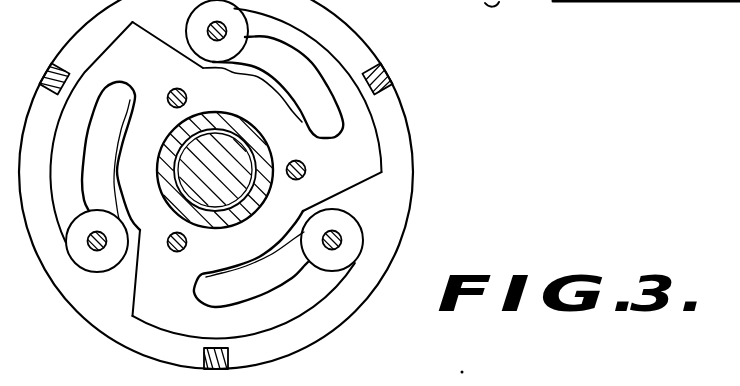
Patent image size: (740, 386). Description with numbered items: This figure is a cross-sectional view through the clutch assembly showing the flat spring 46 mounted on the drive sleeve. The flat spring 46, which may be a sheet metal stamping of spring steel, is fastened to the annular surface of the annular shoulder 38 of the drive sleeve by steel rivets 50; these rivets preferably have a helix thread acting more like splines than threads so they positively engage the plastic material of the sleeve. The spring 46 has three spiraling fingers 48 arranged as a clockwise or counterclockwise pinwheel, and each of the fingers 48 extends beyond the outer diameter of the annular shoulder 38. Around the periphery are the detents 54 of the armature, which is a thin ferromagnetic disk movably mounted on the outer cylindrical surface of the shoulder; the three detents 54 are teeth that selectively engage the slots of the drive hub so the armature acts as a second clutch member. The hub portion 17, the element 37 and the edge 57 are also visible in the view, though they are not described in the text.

The shaft 17 is at (227, 181).
The hub bearing ring 37 is at (272, 149).
The annular shoulder 38 is at (318, 119).
The flat spring 46 is at (235, 108).
The spiraling fingers 48 is at (308, 293).
The steel rivets 50 is at (177, 89).
The detent 54 is at (385, 77).
The plate edge 57 is at (394, 212).